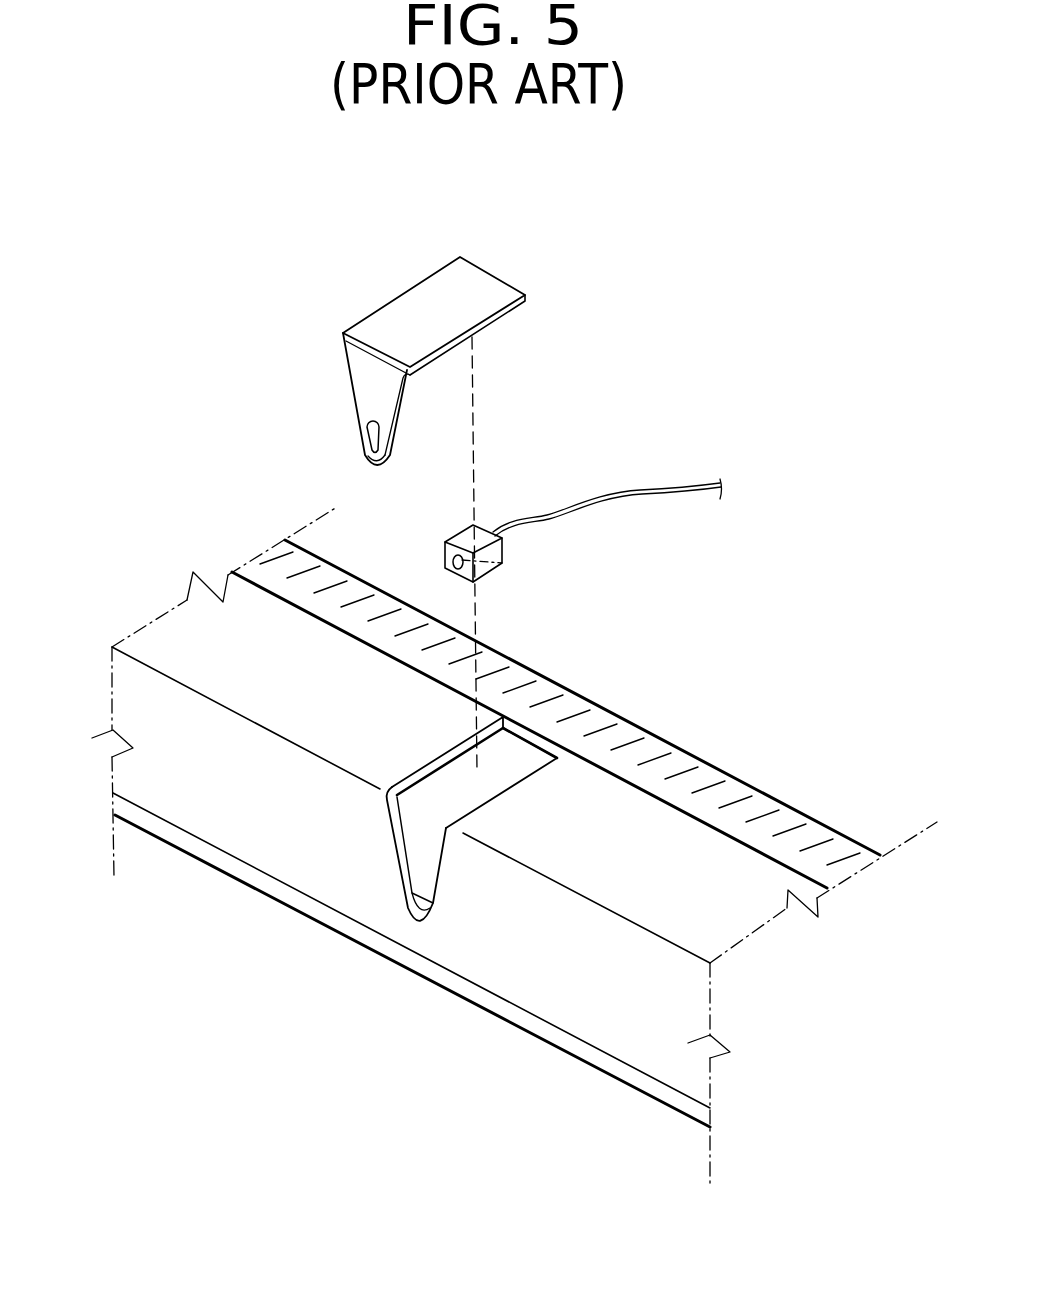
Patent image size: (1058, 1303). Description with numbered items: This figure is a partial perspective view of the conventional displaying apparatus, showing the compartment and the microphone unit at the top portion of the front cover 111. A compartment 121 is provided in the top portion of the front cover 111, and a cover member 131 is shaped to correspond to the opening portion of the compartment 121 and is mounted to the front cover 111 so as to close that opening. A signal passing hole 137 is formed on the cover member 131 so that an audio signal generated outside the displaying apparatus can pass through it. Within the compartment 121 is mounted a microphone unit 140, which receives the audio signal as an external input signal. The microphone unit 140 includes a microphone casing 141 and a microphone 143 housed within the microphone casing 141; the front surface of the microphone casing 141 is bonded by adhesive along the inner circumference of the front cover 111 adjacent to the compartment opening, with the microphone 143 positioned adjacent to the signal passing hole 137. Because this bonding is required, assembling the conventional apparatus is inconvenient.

The front cover 111 is at (162, 617).
The compartment 121 is at (396, 856).
The cover member 131 is at (397, 308).
The signal passing hole 137 is at (367, 425).
The microphone unit 140 is at (583, 551).
The microphone casing 141 is at (502, 538).
The microphone 143 is at (502, 565).